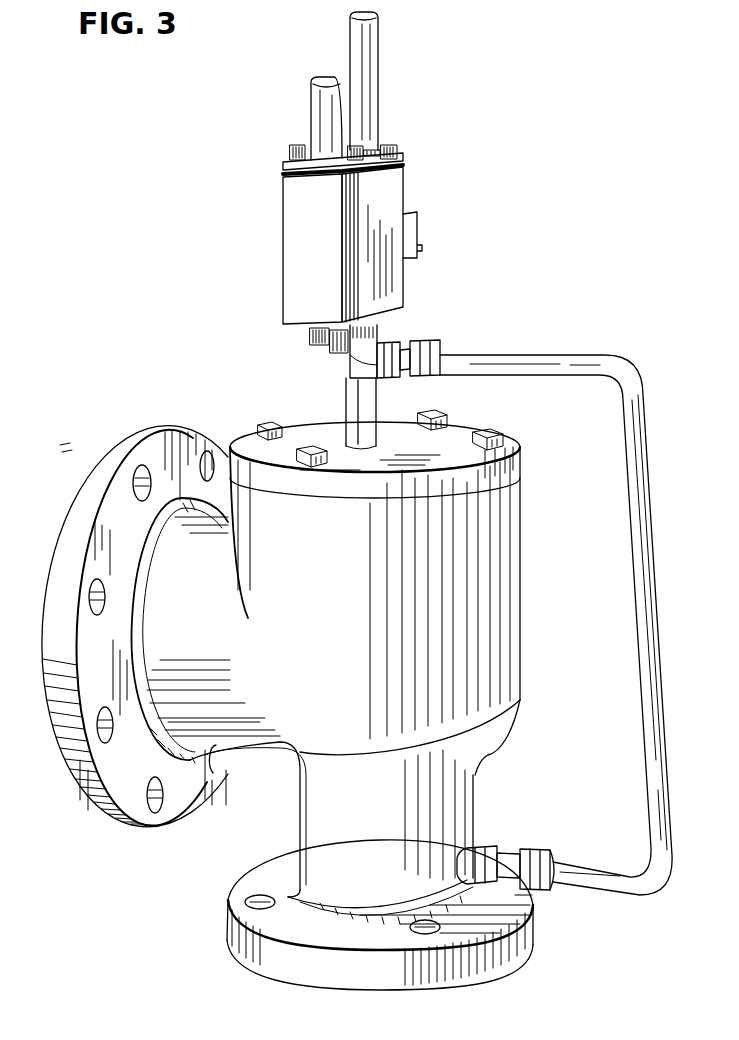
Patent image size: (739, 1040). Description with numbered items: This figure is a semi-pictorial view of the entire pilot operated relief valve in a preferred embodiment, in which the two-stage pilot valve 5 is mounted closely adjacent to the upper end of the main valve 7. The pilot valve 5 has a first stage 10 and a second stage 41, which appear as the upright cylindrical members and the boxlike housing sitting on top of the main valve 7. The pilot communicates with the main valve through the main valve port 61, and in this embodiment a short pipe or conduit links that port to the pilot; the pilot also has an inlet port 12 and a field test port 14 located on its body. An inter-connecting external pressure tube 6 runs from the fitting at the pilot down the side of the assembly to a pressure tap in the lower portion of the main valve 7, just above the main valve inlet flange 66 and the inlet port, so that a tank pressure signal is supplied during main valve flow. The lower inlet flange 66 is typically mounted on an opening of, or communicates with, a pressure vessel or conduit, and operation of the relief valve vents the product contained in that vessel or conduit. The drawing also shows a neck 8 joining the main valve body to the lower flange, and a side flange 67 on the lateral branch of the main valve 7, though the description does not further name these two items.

The actuator housing 5 is at (414, 286).
The tubing 6 is at (664, 752).
The outlet flange 7 is at (233, 960).
The neck 8 is at (480, 777).
The indicator rod 10 is at (391, 99).
The fitting 12 is at (397, 310).
The terminal tab 14 is at (413, 226).
The mounting plate 41 is at (280, 158).
The valve stem 61 is at (378, 443).
The lower fitting 66 is at (480, 963).
The inlet flange 67 is at (135, 585).